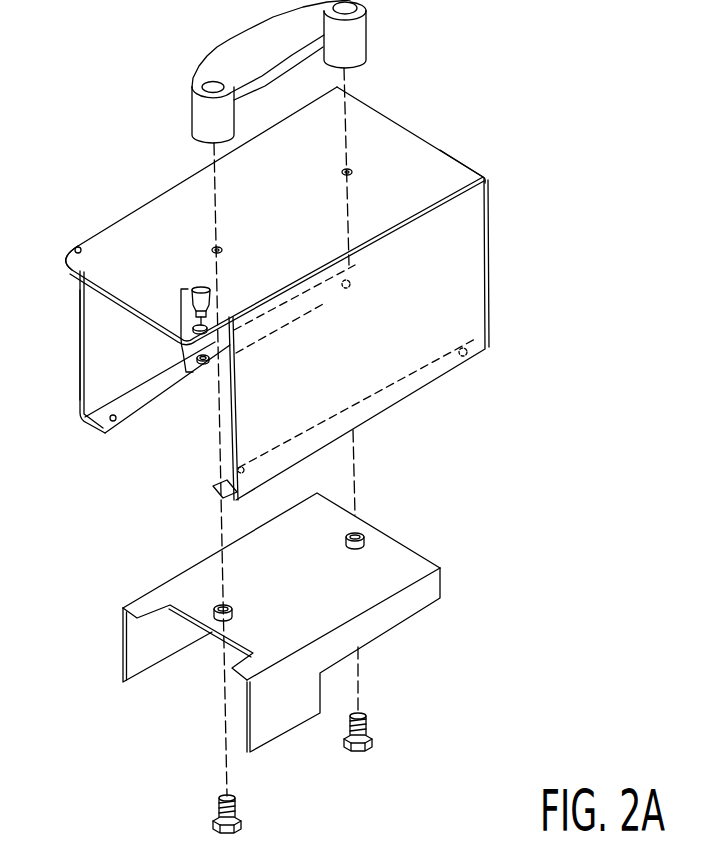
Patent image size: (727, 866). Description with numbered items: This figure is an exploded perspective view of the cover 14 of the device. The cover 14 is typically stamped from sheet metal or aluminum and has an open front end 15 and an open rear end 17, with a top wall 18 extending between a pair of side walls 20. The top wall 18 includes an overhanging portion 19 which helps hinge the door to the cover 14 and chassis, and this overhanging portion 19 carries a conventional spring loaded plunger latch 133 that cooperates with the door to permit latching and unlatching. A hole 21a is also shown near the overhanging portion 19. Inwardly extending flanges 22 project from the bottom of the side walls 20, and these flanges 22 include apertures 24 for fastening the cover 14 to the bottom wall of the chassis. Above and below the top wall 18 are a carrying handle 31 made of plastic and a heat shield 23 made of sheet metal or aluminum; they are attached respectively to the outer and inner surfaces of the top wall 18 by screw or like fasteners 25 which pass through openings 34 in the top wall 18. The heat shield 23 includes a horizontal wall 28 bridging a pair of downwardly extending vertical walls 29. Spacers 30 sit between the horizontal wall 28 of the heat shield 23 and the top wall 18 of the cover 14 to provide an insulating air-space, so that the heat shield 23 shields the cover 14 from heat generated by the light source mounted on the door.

The carrying handle 31 is at (253, 49).
The cover 14 is at (144, 206).
The open rear end 17 is at (419, 138).
The top wall 18 is at (440, 167).
The overhanging portion 19 is at (73, 262).
The hole 21a is at (75, 246).
The open front end 15 is at (98, 327).
The side walls 20 is at (96, 372).
The flanges 22 is at (150, 398).
The apertures 24 is at (113, 421).
The openings 34 is at (344, 172).
The spring loaded plunger latch 133 is at (181, 343).
The heat shield 23 is at (410, 566).
The horizontal wall 28 is at (420, 553).
The vertical walls 29 is at (397, 610).
The spacers 30 is at (344, 541).
The fasteners 25 is at (352, 752).